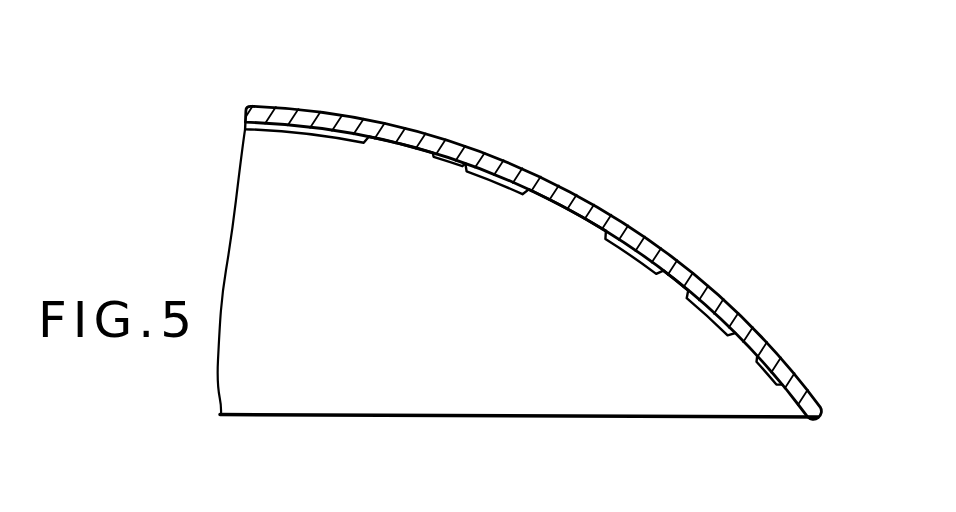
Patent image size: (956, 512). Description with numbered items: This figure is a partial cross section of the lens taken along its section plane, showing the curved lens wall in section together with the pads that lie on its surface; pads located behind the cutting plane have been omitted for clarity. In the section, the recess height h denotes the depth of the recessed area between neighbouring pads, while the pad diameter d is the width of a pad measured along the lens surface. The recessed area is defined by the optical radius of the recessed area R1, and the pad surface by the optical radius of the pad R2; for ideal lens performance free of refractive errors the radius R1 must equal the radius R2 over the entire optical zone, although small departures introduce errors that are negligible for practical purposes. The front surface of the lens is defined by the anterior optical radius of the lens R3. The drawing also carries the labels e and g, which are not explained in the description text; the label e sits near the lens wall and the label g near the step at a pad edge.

The liner pad thickness h is at (220, 77).
The gap between liner pads d is at (372, 155).
The radius of liner pad R3 is at (513, 170).
The inner radius of shell R1 is at (570, 213).
The shell wall thickness e is at (589, 221).
The radius at pad step R2 is at (697, 308).
The step gap g is at (711, 317).